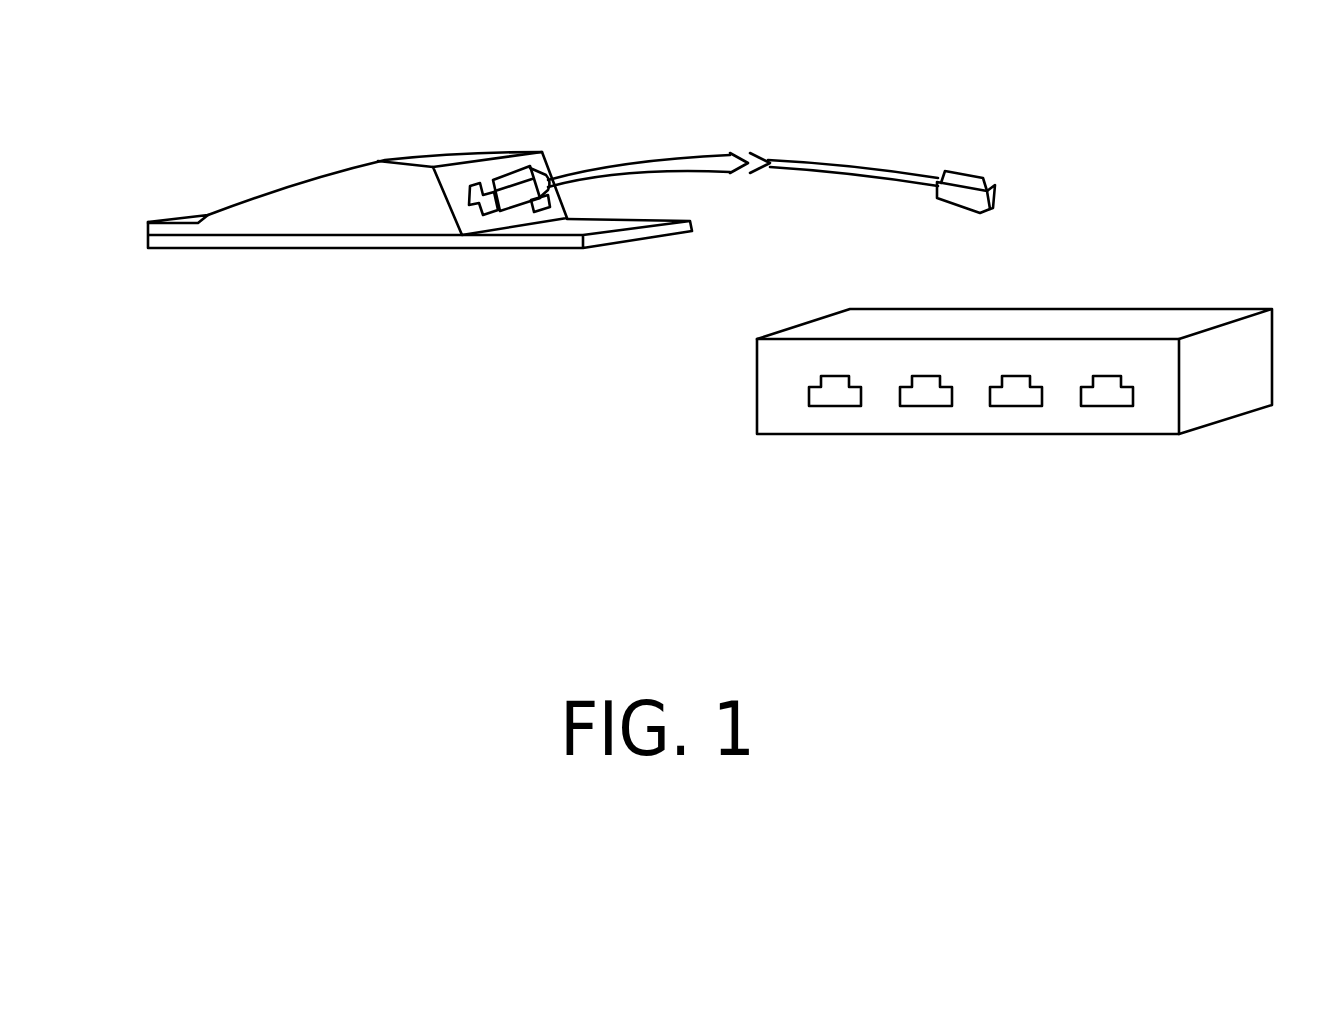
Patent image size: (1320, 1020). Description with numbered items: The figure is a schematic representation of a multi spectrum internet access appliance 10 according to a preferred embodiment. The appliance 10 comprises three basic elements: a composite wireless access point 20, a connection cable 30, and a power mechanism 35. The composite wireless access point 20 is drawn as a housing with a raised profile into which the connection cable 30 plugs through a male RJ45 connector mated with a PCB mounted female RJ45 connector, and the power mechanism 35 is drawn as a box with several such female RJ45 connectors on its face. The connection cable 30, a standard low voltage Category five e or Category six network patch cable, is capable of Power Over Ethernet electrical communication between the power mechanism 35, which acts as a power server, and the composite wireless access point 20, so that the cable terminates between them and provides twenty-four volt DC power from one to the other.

The multi spectrum internet access appliance 10 is at (447, 340).
The composite wireless access point 20 is at (287, 202).
The connection cable 30 is at (807, 155).
The power mechanism 35 is at (1144, 292).